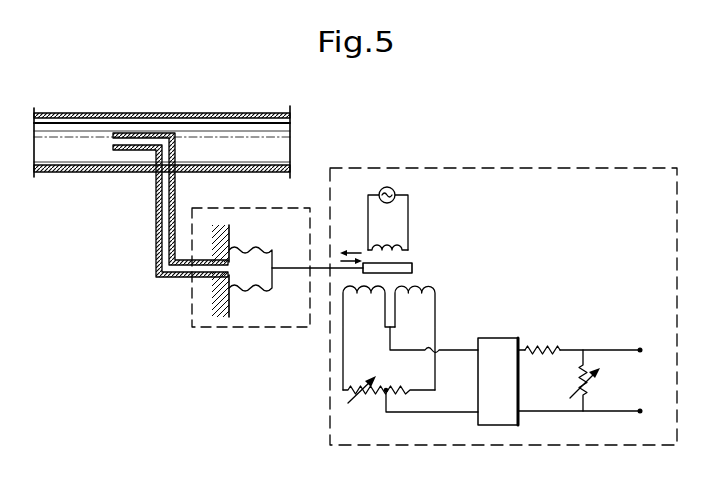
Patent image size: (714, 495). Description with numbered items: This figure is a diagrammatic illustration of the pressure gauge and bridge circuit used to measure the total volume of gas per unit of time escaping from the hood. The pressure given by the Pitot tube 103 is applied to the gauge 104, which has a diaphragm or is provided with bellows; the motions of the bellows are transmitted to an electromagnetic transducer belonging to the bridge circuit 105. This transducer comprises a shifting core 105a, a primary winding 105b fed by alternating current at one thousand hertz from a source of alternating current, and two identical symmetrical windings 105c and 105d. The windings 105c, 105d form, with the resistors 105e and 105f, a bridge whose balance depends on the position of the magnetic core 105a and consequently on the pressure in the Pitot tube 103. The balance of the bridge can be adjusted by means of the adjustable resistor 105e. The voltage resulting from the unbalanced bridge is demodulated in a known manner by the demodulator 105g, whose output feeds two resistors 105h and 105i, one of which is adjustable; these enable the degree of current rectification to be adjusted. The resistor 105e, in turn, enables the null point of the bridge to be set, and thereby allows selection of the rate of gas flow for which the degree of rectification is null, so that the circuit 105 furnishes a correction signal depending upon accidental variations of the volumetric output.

The Pitot tube 103 is at (142, 135).
The pressure gauge 104 is at (250, 318).
The bridge circuit 105 is at (611, 176).
The shifting core 105a is at (412, 266).
The primary winding 105b is at (408, 249).
The symmetrical winding 105c is at (366, 298).
The symmetrical winding 105d is at (428, 286).
The adjustable resistor 105e is at (345, 390).
The resistor 105f is at (410, 392).
The demodulator 105g is at (502, 345).
The resistor 105h is at (560, 345).
The adjustable resistor 105i is at (590, 389).